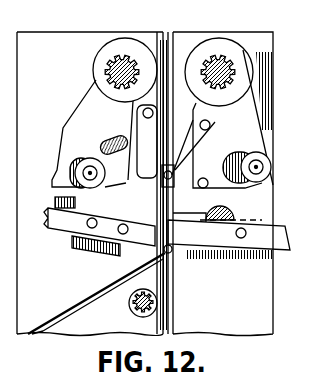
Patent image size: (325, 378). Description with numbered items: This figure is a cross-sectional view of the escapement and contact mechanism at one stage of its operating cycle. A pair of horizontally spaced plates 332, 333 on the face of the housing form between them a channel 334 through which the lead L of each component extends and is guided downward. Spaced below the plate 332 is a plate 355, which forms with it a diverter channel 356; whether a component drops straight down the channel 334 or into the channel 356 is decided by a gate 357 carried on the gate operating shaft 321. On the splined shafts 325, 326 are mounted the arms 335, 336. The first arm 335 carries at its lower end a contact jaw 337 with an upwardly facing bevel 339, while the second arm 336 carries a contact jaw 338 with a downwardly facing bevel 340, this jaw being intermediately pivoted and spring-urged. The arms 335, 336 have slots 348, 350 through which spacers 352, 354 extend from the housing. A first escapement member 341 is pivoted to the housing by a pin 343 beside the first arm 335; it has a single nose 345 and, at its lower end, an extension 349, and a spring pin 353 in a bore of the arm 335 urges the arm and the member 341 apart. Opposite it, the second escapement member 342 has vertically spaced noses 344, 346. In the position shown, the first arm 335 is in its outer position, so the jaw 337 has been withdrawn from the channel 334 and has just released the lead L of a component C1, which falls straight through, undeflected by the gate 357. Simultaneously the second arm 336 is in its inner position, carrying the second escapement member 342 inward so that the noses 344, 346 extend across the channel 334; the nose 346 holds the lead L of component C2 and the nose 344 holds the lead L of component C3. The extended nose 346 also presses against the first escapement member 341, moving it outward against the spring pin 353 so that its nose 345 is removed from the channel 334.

The gate operating shaft 321 is at (142, 315).
The splined shaft 325 is at (110, 62).
The splined shaft 326 is at (235, 65).
The plate 332 is at (152, 35).
The plate 333 is at (206, 35).
The channel 334 is at (168, 43).
The first arm 335 is at (119, 112).
The second arm 336 is at (245, 112).
The contact jaw 337 is at (67, 220).
The contact jaw 338 is at (229, 244).
The bevel 339 is at (223, 202).
The bevel 340 is at (182, 250).
The first escapement member 341 is at (135, 125).
The second escapement member 342 is at (212, 127).
The pin 343 is at (137, 102).
The nose 344 is at (173, 180).
The nose 345 is at (125, 177).
The nose 346 is at (273, 192).
The slot 348 is at (54, 178).
The extension 349 is at (56, 200).
The slot 350 is at (275, 183).
The spacer 352 is at (80, 167).
The spring pin 353 is at (101, 136).
The spacer 354 is at (263, 157).
The plate 355 is at (122, 292).
The diverter channel 356 is at (115, 283).
The gate 357 is at (173, 307).
The component C1 is at (160, 250).
The component C2 is at (157, 152).
The component C3 is at (147, 141).
The lead L is at (188, 202).